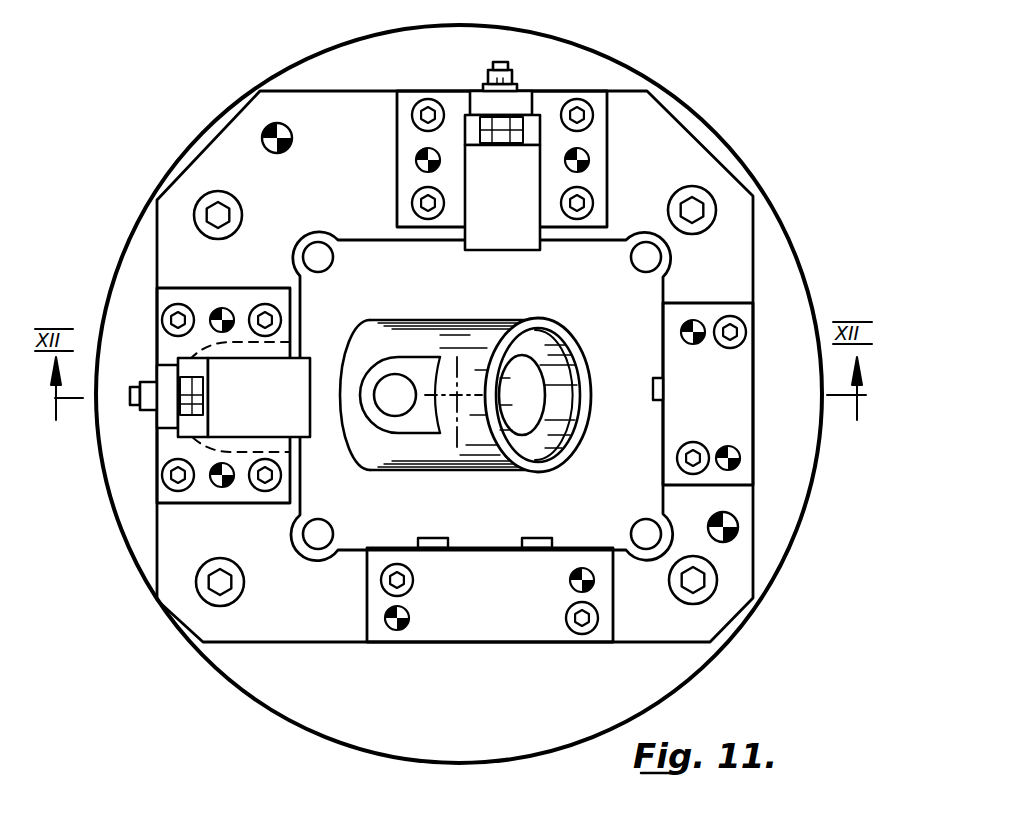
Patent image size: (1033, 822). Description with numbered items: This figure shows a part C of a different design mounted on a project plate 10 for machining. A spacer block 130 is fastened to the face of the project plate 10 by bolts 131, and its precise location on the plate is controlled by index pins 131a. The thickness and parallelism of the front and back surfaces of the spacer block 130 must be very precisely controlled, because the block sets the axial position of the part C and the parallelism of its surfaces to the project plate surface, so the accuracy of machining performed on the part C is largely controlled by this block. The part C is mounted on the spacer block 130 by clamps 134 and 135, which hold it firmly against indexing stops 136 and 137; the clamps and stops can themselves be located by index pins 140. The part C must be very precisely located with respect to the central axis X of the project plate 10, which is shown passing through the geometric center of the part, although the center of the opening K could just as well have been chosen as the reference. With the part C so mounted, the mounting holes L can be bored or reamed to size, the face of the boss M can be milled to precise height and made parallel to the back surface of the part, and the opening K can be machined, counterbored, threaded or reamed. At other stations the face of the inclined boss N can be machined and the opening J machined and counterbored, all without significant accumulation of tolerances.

The project plate 10 is at (822, 493).
The spacer block 130 is at (625, 80).
The bolts 131 is at (236, 210).
The index pins 131a is at (273, 124).
The clamp 134 is at (498, 251).
The clamp 135 is at (311, 358).
The indexing stop 136 is at (540, 538).
The indexing stop 137 is at (653, 390).
The index pins 140 is at (224, 308).
The part c is at (678, 280).
The mounting holes L is at (316, 248).
The opening K is at (387, 390).
The central axis X is at (456, 387).
The opening J is at (573, 345).
The boss M is at (413, 422).
The inclined boss N is at (470, 462).